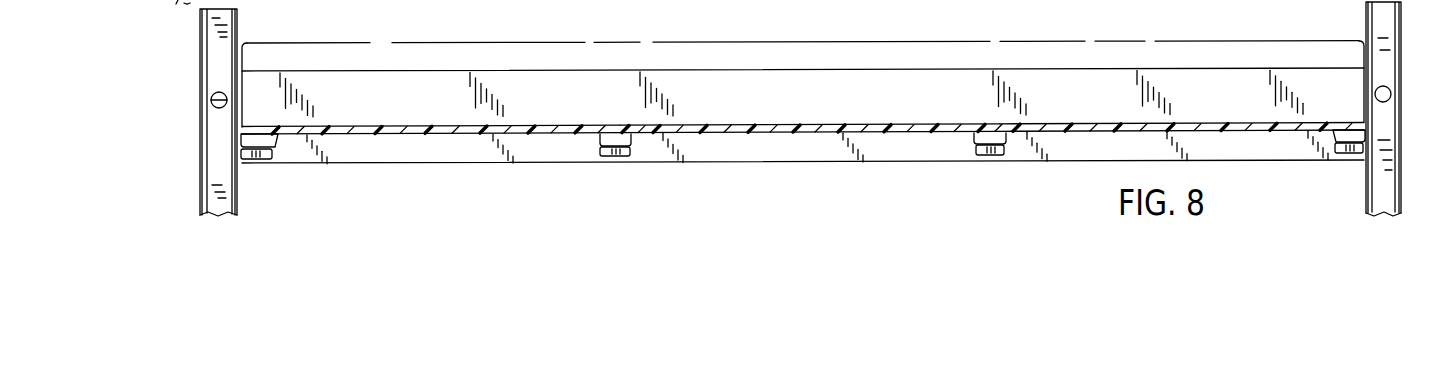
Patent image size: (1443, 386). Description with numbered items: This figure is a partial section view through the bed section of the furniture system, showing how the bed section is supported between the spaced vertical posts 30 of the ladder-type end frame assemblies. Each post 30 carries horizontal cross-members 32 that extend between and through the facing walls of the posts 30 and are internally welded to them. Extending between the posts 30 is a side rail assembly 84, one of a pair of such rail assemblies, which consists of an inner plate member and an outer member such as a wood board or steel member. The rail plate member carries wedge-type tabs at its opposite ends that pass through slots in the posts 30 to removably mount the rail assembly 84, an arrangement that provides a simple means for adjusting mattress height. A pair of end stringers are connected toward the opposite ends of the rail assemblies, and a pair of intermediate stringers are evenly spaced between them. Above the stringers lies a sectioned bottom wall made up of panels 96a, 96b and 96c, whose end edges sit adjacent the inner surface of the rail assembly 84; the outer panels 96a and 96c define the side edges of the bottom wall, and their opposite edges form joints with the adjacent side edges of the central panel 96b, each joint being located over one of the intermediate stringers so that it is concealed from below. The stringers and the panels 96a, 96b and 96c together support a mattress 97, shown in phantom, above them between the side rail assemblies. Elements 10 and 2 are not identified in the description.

The bed frame assembly 10 is at (192, 170).
The hole in post 2 is at (211, 103).
The vertical post 30 is at (1407, 141).
The horizontal cross-member 32 is at (1391, 91).
The side rail assembly 84 is at (906, 67).
The mattress 97 is at (1122, 39).
The panel 96a is at (1183, 122).
The panel 96b is at (795, 125).
The panel 96c is at (432, 126).